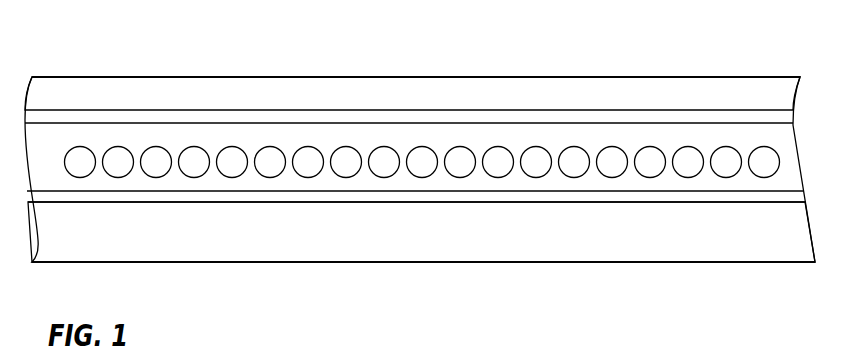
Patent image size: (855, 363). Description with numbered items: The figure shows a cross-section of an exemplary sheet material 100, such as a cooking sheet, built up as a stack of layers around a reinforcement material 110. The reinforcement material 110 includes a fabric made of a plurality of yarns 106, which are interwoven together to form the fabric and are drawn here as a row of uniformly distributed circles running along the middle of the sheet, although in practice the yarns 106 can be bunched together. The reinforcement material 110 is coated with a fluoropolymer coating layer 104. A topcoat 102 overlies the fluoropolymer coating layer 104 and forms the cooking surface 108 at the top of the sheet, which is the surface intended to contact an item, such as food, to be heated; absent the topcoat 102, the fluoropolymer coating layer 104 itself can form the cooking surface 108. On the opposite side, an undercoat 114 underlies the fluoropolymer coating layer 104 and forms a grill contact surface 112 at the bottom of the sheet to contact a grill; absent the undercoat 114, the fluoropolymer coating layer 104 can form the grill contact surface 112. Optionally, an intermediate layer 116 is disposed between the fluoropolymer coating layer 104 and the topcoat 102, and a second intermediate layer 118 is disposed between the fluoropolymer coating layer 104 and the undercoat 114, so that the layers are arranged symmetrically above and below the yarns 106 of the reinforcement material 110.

The sheet material 100 is at (188, 48).
The topcoat 102 is at (437, 92).
The fluoropolymer coating layer 104 is at (478, 180).
The yarns 106 is at (80, 166).
The cooking surface 108 is at (547, 77).
The reinforcement material 110 is at (662, 147).
The grill contact surface 112 is at (562, 262).
The undercoat 114 is at (635, 233).
The intermediate layer 116 is at (255, 118).
The intermediate layer 118 is at (705, 198).